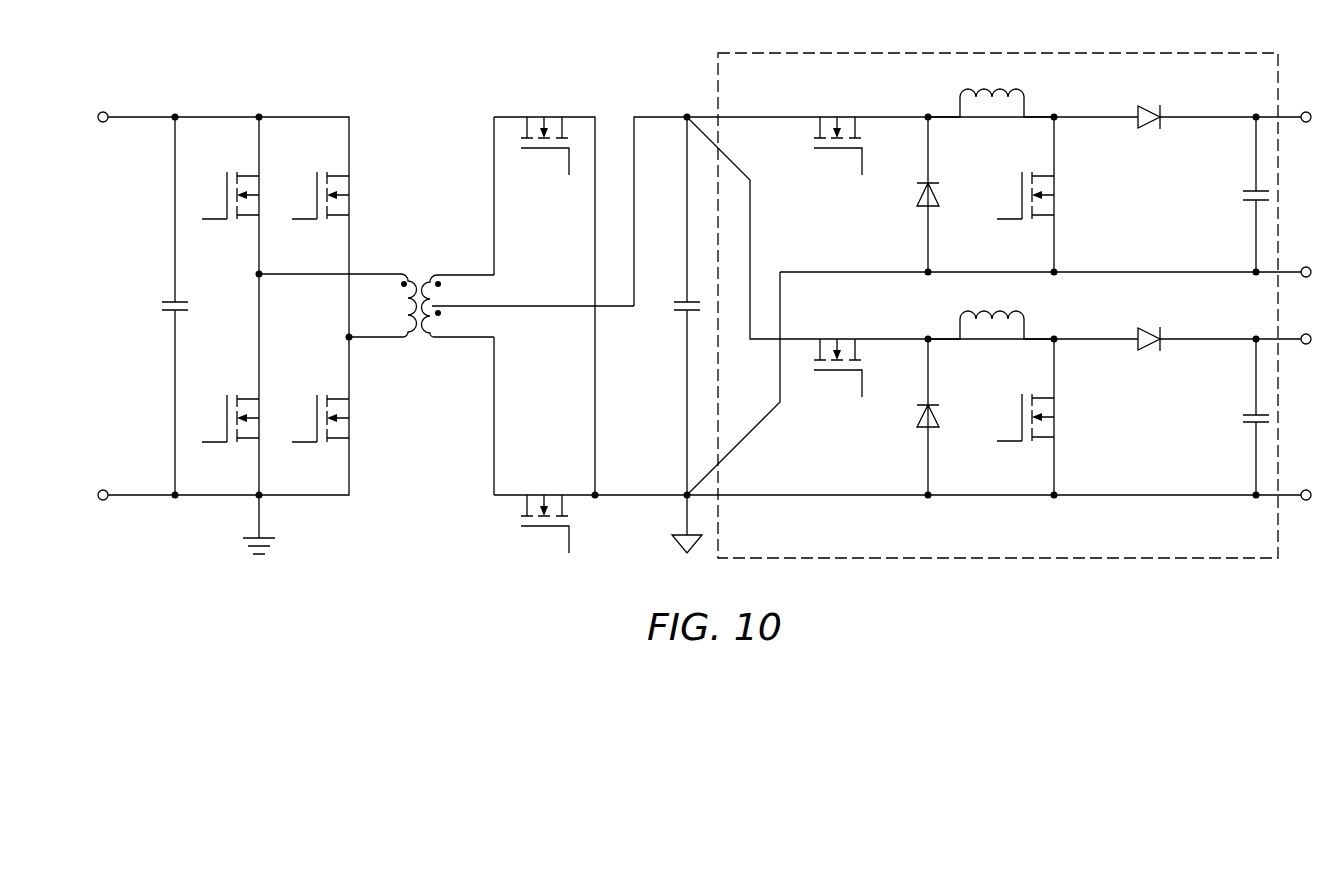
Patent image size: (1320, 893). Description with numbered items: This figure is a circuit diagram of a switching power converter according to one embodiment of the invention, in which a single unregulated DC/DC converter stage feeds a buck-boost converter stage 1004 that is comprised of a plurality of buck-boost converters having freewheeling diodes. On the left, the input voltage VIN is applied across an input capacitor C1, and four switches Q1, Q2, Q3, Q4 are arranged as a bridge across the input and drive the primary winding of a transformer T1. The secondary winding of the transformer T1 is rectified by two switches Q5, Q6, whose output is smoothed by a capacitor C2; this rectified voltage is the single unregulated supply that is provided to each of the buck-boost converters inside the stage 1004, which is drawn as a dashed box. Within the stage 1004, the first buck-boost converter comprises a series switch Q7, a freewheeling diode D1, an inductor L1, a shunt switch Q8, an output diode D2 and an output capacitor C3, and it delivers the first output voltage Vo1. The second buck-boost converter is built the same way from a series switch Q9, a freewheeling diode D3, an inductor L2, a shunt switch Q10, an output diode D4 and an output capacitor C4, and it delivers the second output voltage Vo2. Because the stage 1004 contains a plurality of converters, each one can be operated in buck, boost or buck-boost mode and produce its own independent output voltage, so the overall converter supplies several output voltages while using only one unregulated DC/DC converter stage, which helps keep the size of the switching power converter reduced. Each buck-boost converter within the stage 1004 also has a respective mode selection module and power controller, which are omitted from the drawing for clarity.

The buck-boost converter stage 1004 is at (1206, 38).
The primary switch Q1 is at (228, 195).
The primary switch Q2 is at (228, 418).
The primary switch Q3 is at (318, 195).
The primary switch Q4 is at (318, 418).
The synchronous rectifier switch Q5 is at (545, 525).
The synchronous rectifier switch Q6 is at (545, 147).
The buck switch Q7 is at (838, 147).
The buck switch Q8 is at (1023, 194).
The buck switch Q9 is at (838, 369).
The buck switch Q10 is at (1019, 417).
The input capacitor C1 is at (188, 306).
The bus capacitor C2 is at (673, 306).
The output capacitor C3 is at (1243, 194).
The output capacitor C4 is at (1243, 417).
The diode D1 is at (917, 194).
The diode D2 is at (1149, 105).
The diode D3 is at (917, 417).
The diode D4 is at (1149, 328).
The inductor L1 is at (991, 90).
The inductor L2 is at (991, 312).
The transformer T1 is at (446, 292).
The input voltage VIN is at (125, 307).
The output voltage 1 Vo1 is at (1304, 196).
The output voltage 2 Vo2 is at (1304, 418).